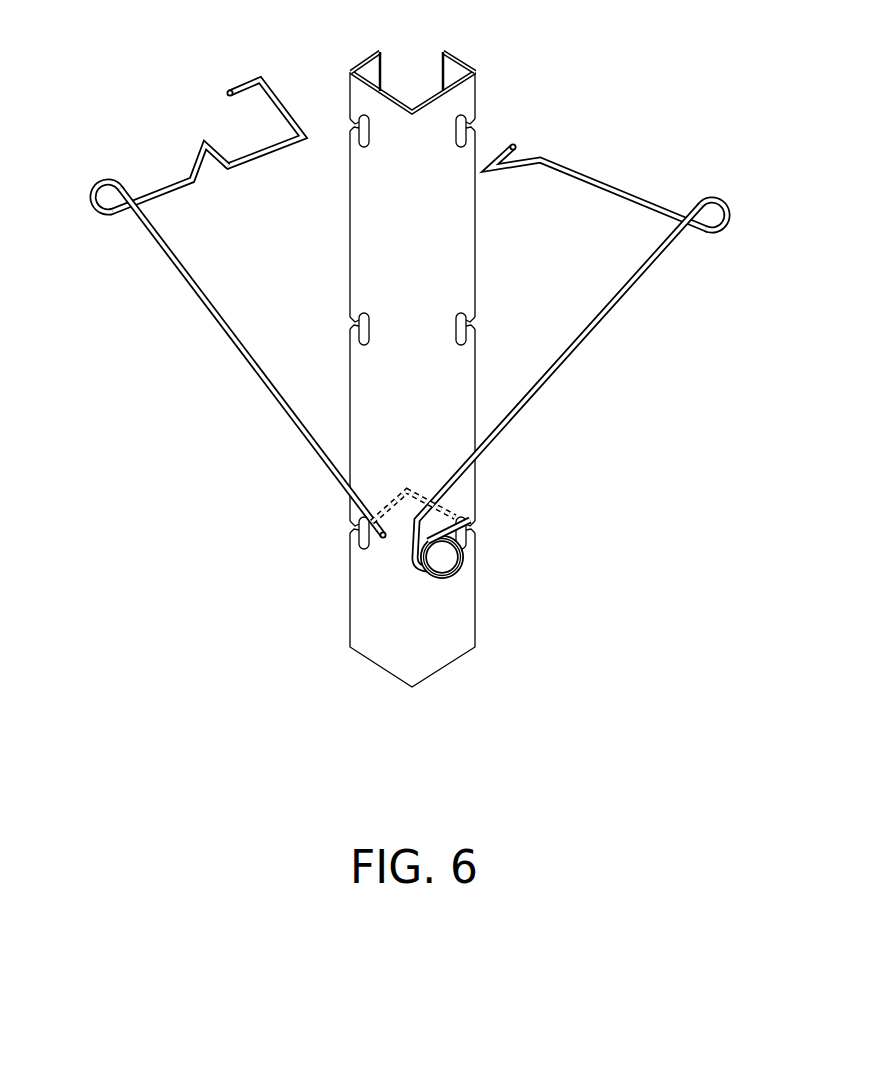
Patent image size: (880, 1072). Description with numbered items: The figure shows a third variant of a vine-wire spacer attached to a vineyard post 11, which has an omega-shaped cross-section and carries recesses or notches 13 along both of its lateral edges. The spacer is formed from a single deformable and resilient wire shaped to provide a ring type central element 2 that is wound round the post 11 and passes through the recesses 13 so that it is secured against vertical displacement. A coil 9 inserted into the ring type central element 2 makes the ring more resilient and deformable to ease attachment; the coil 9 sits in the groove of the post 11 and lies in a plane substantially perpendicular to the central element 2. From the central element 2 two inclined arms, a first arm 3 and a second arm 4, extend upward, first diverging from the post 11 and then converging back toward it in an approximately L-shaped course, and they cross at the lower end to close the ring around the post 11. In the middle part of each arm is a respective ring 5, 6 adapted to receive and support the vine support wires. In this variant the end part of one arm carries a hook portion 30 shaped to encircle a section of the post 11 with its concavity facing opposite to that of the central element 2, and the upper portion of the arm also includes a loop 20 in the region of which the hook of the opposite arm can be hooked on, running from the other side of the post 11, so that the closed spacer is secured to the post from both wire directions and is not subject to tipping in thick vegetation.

The ring type central element 2 is at (408, 489).
The first arm 3 is at (248, 365).
The second arm 4 is at (553, 372).
The ring 5 is at (102, 183).
The ring 6 is at (713, 197).
The coil 9 is at (460, 570).
The vineyard post 11 is at (477, 223).
The recesses or notches 13 is at (478, 125).
The loop 20 is at (203, 143).
The hook portion 30 is at (247, 78).